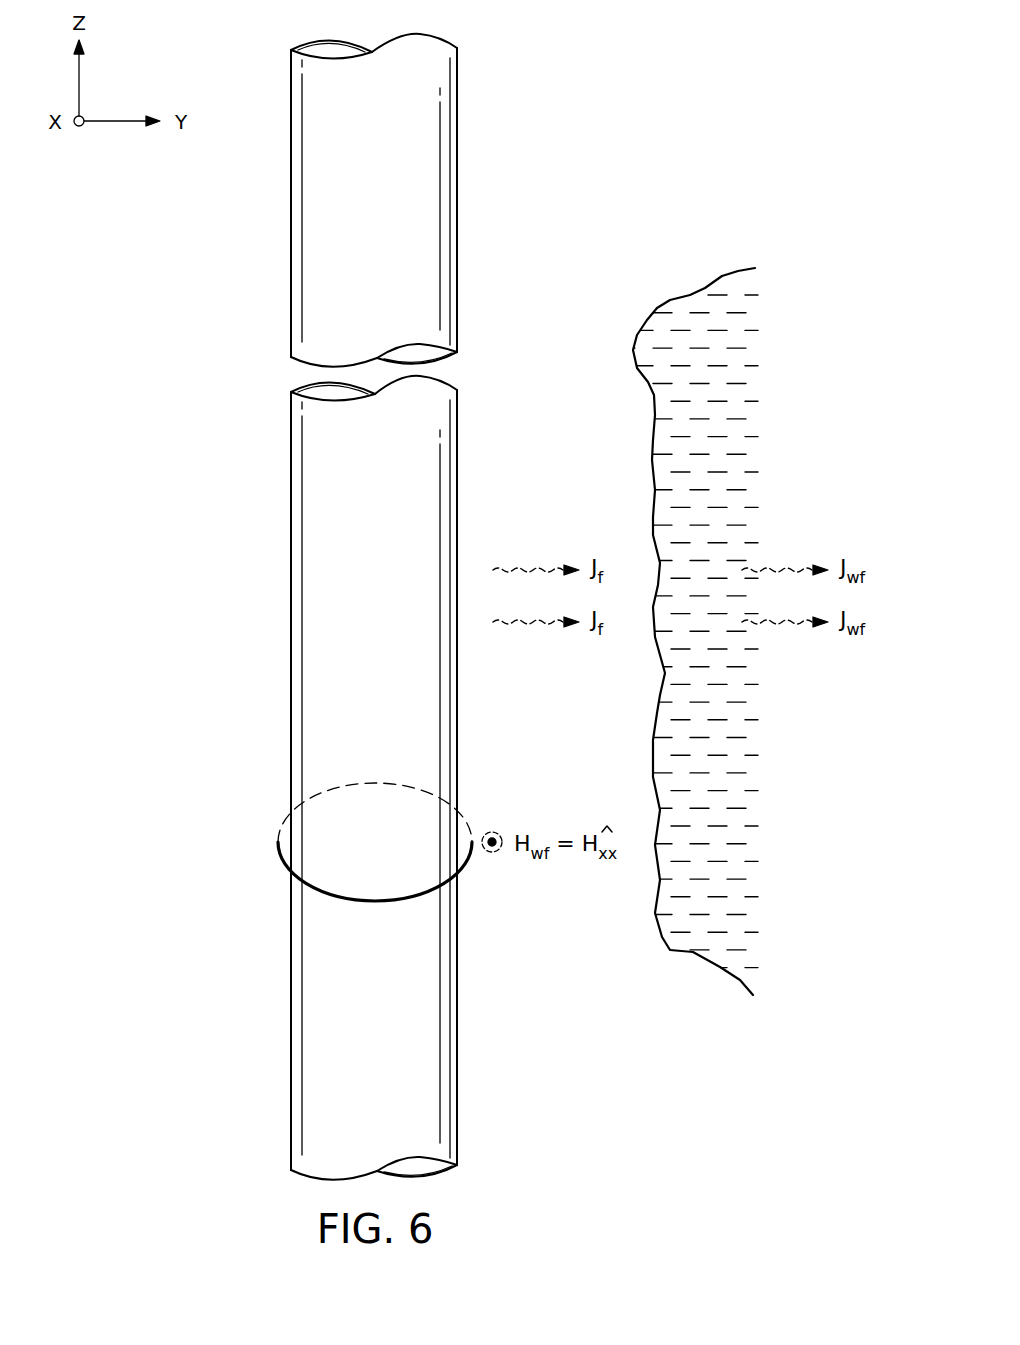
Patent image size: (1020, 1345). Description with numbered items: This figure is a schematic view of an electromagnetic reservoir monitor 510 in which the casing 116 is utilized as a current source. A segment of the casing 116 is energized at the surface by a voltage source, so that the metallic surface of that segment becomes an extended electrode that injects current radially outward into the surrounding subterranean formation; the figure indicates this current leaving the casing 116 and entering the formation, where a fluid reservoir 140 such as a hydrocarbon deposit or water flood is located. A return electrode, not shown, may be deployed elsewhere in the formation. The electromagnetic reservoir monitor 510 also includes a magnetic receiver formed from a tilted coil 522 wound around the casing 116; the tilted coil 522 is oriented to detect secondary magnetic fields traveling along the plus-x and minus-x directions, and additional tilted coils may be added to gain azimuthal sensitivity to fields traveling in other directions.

The electromagnetic reservoir monitor 510 is at (118, 268).
The casing 116 is at (459, 206).
The tilted coil 522 is at (278, 842).
The fluid reservoir 140 is at (655, 905).